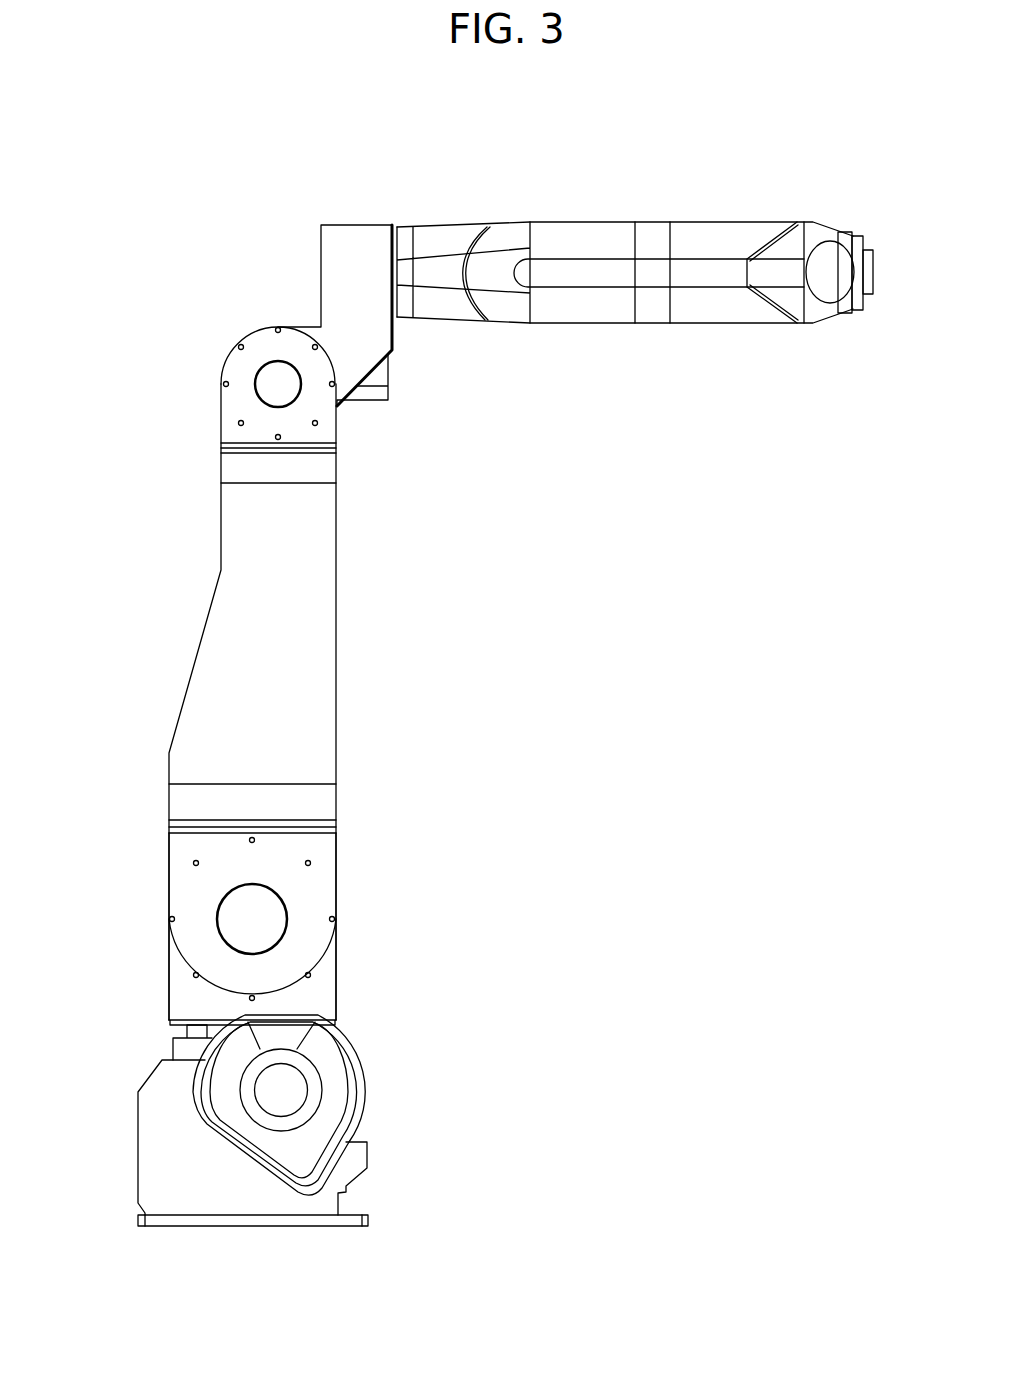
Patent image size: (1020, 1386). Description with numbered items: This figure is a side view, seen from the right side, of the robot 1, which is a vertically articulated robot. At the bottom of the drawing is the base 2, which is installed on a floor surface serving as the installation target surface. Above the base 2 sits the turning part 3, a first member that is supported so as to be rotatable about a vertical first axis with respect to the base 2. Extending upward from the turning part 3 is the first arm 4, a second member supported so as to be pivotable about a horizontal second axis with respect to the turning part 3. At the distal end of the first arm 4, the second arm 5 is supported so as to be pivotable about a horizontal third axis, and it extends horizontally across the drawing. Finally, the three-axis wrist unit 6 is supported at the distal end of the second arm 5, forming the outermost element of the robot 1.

The robot 1 is at (150, 210).
The base 2 is at (128, 1162).
The turning part 3 is at (155, 990).
The first arm 4 is at (185, 662).
The second arm 5 is at (358, 218).
The three-axis wrist unit 6 is at (885, 258).